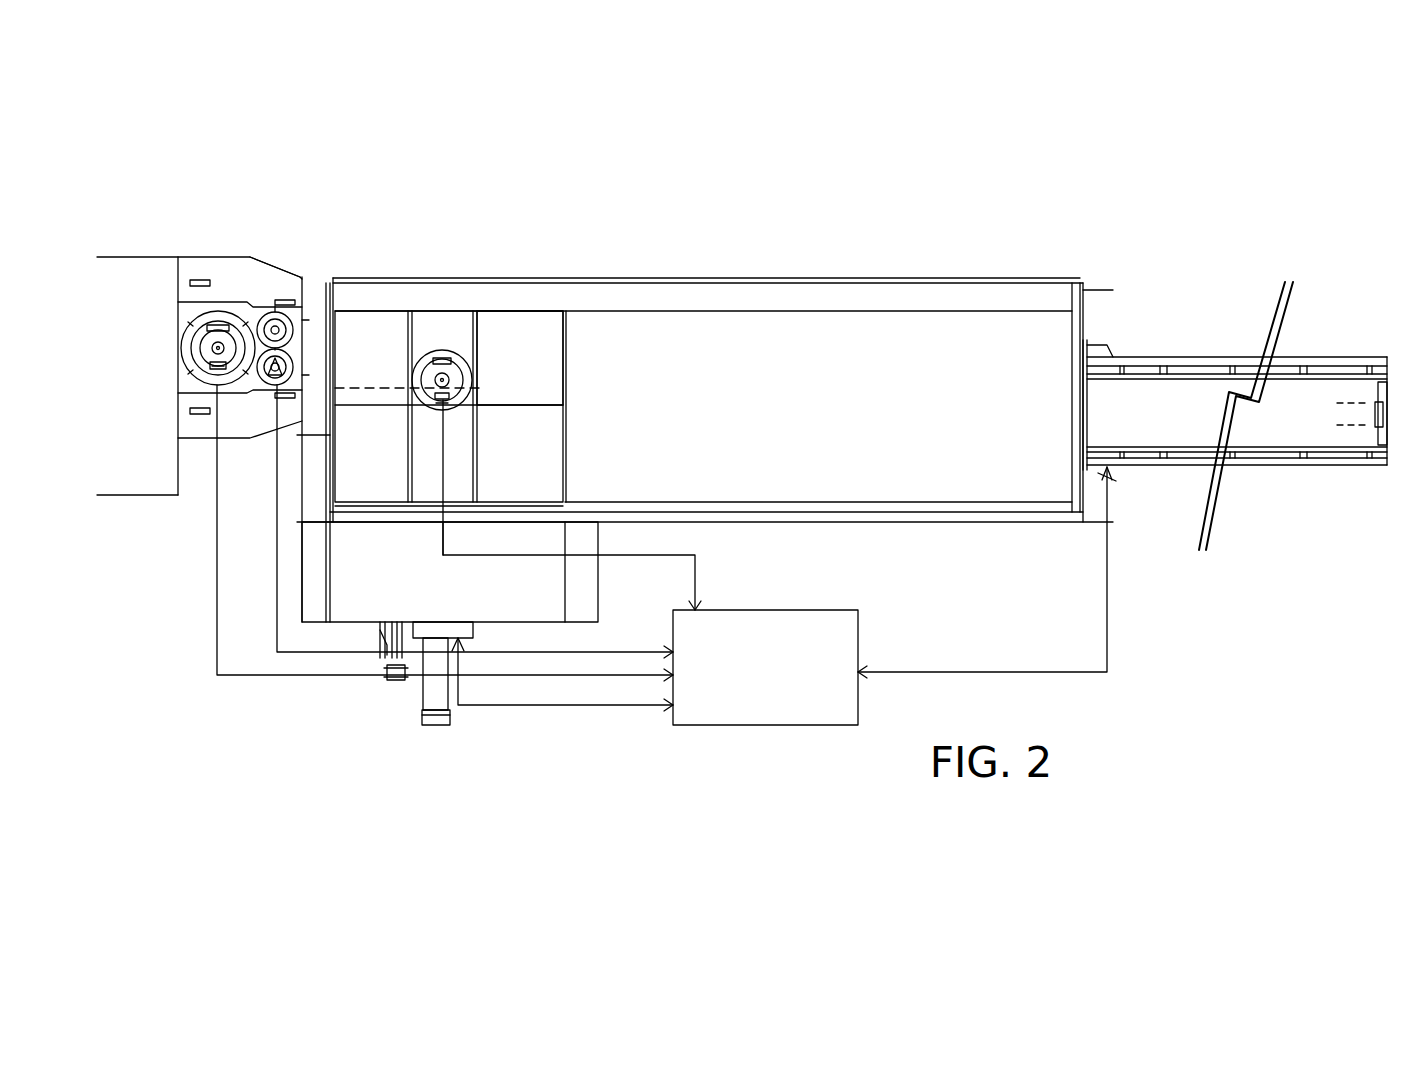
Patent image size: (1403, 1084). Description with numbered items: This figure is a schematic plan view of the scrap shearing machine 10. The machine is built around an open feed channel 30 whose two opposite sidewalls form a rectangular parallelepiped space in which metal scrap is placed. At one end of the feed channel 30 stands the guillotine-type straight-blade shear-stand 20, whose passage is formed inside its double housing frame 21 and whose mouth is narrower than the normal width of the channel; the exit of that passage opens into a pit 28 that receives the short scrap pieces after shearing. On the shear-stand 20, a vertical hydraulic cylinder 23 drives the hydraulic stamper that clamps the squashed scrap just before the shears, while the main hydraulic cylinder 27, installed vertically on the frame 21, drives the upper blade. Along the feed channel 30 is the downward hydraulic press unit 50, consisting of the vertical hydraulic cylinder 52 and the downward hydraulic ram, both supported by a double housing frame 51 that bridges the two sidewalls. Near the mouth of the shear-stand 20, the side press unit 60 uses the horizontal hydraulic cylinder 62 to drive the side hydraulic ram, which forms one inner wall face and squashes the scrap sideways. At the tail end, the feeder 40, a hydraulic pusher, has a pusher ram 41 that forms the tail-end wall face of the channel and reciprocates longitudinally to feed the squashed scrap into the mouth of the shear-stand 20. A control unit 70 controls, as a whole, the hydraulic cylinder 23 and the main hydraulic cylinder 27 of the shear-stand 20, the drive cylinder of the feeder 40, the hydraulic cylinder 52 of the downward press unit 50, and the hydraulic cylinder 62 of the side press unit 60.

The scrap shearing machine 10 is at (1022, 256).
The straight-blade shear-stand 20 is at (290, 265).
The double housing frame 21 is at (265, 263).
The vertical hydraulic cylinder 23 is at (290, 318).
The main hydraulic cylinder 27 is at (224, 328).
The pit 28 is at (203, 376).
The feed channel 30 is at (684, 420).
The feeder 40 is at (1142, 398).
The pusher ram 41 is at (1085, 290).
The downward hydraulic press unit 50 is at (520, 327).
The double housing frame 51 is at (535, 353).
The vertical hydraulic cylinder 52 is at (447, 352).
The side press unit 60 is at (483, 580).
The horizontal hydraulic cylinder 62 is at (433, 685).
The control unit 70 is at (752, 681).